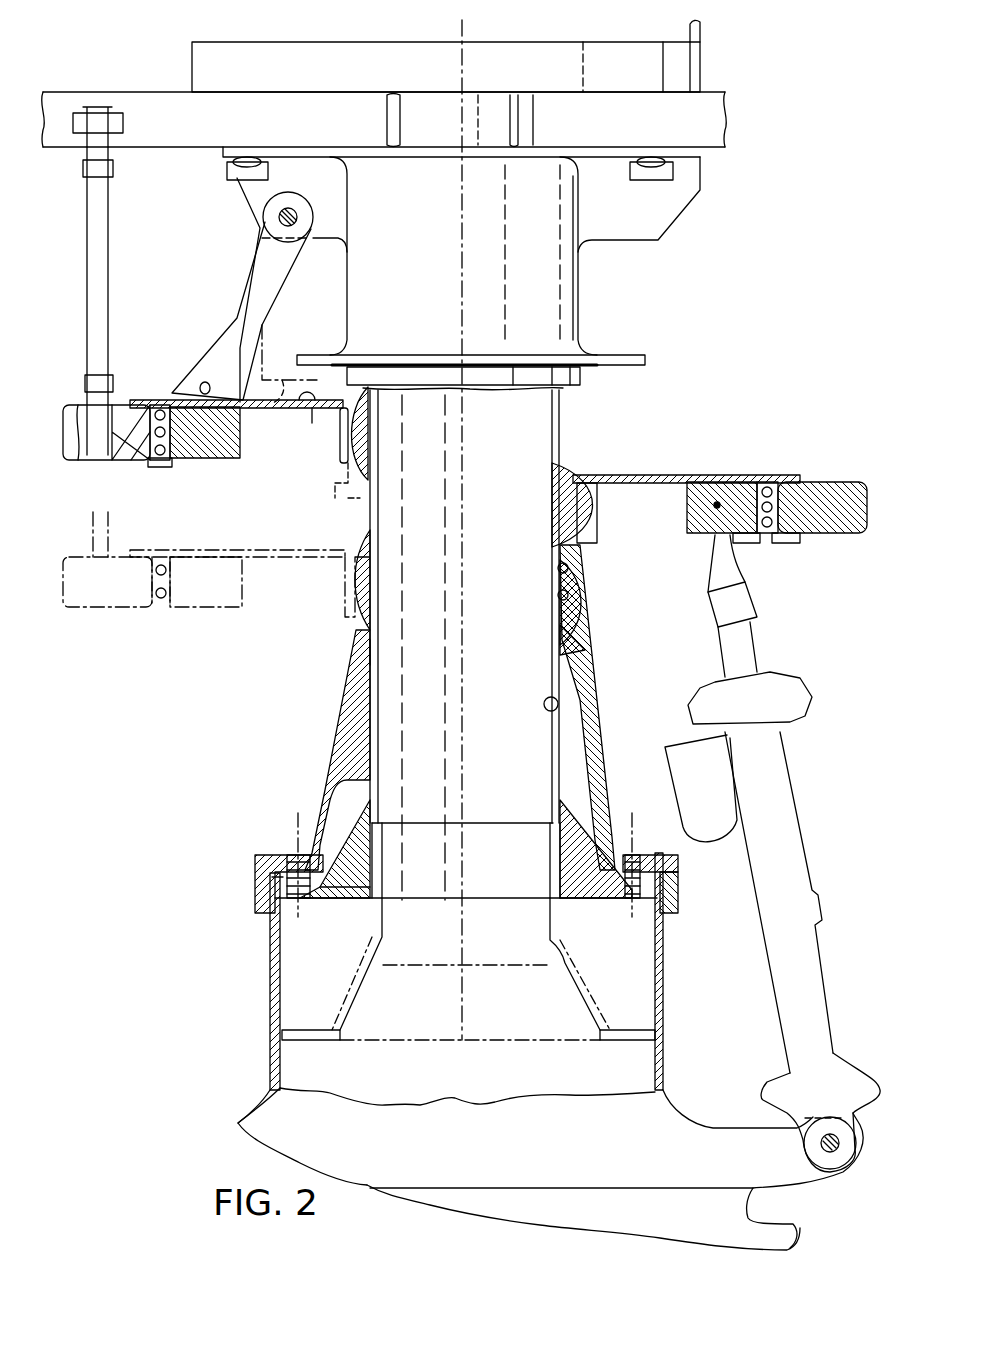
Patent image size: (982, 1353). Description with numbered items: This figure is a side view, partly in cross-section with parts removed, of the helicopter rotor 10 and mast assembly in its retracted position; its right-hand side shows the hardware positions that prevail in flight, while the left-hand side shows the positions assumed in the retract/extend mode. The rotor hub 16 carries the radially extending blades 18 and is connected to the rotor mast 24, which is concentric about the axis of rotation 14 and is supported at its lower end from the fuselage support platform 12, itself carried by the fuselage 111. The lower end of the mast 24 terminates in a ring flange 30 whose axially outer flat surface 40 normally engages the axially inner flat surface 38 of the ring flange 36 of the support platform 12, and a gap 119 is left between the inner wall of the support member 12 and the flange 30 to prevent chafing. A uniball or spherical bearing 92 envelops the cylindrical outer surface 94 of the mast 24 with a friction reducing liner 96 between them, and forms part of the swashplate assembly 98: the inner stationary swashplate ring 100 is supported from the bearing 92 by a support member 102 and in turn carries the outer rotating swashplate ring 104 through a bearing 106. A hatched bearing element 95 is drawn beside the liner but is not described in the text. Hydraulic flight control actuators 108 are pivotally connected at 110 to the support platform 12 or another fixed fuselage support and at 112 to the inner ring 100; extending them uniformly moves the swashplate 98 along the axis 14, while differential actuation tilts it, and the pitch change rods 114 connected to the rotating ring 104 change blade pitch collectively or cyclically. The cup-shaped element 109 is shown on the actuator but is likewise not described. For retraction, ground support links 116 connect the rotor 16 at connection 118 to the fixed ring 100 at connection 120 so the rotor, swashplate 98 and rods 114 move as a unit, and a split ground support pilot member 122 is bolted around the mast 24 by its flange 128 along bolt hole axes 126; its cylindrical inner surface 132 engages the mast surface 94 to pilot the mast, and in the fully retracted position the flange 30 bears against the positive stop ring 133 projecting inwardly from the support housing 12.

The helicopter rotor 10 is at (727, 219).
The fuselage support platform 12 is at (665, 1000).
The axis of rotation 14 is at (468, 495).
The rotor hub 16 is at (250, 217).
The blades 18 is at (147, 136).
The rotor mast 24 is at (372, 652).
The ring flange 30 is at (310, 1023).
The ring flange 36 is at (630, 907).
The axially inner flat surface 38 is at (317, 900).
The axially outer flat surface 40 is at (287, 853).
The uniball spherical bearing 92 is at (372, 427).
The cylindrical outer surface 94 is at (558, 567).
The bearing race 95 is at (567, 628).
The friction reducing liner 96 is at (558, 596).
The swashplate assembly 98 is at (465, 524).
The inner stationary swashplate ring 100 is at (230, 448).
The support member 102 is at (312, 415).
The outer rotating swashplate ring 104 is at (123, 448).
The bearing 106 is at (180, 463).
The hydraulic flight control actuators 108 is at (803, 843).
The cup 109 is at (701, 788).
The pivotal connection 110 is at (830, 1130).
The fuselage 111 is at (767, 1220).
The pivotal connection 112 is at (717, 505).
The pitch change rods 114 is at (110, 220).
The ground support links 116 is at (293, 263).
The connection 118 is at (297, 213).
The gap 119 is at (680, 890).
The connection 120 is at (203, 383).
The split ground support pilot member 122 is at (332, 710).
The bolt hole axes 126 is at (297, 833).
The flange 128 is at (657, 853).
The cylindrical inner surface 132 is at (558, 703).
The positive stop ring 133 is at (295, 1045).